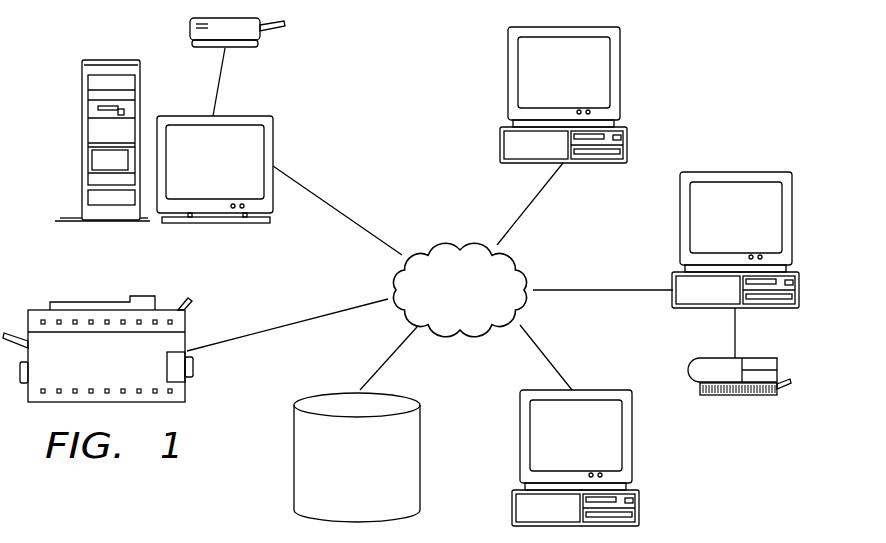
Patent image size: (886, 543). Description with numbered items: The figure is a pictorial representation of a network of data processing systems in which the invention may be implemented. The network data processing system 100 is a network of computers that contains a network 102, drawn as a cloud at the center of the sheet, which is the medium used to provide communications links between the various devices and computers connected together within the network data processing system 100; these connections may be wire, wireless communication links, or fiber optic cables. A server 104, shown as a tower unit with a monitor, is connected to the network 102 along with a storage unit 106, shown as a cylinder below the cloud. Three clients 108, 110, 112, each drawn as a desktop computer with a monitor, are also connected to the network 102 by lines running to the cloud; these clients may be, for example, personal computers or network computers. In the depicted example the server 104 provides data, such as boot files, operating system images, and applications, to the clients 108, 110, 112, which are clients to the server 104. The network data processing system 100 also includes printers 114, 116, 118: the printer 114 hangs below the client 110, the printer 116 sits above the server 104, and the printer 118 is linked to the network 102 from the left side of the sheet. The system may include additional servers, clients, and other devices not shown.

The network data processing system 100 is at (723, 95).
The network 102 is at (480, 304).
The server 104 is at (236, 175).
The storage unit 106 is at (377, 478).
The client 108 is at (563, 95).
The client 110 is at (735, 240).
The client 112 is at (575, 458).
The printer 114 is at (737, 396).
The printer 116 is at (190, 30).
The printer 118 is at (124, 374).